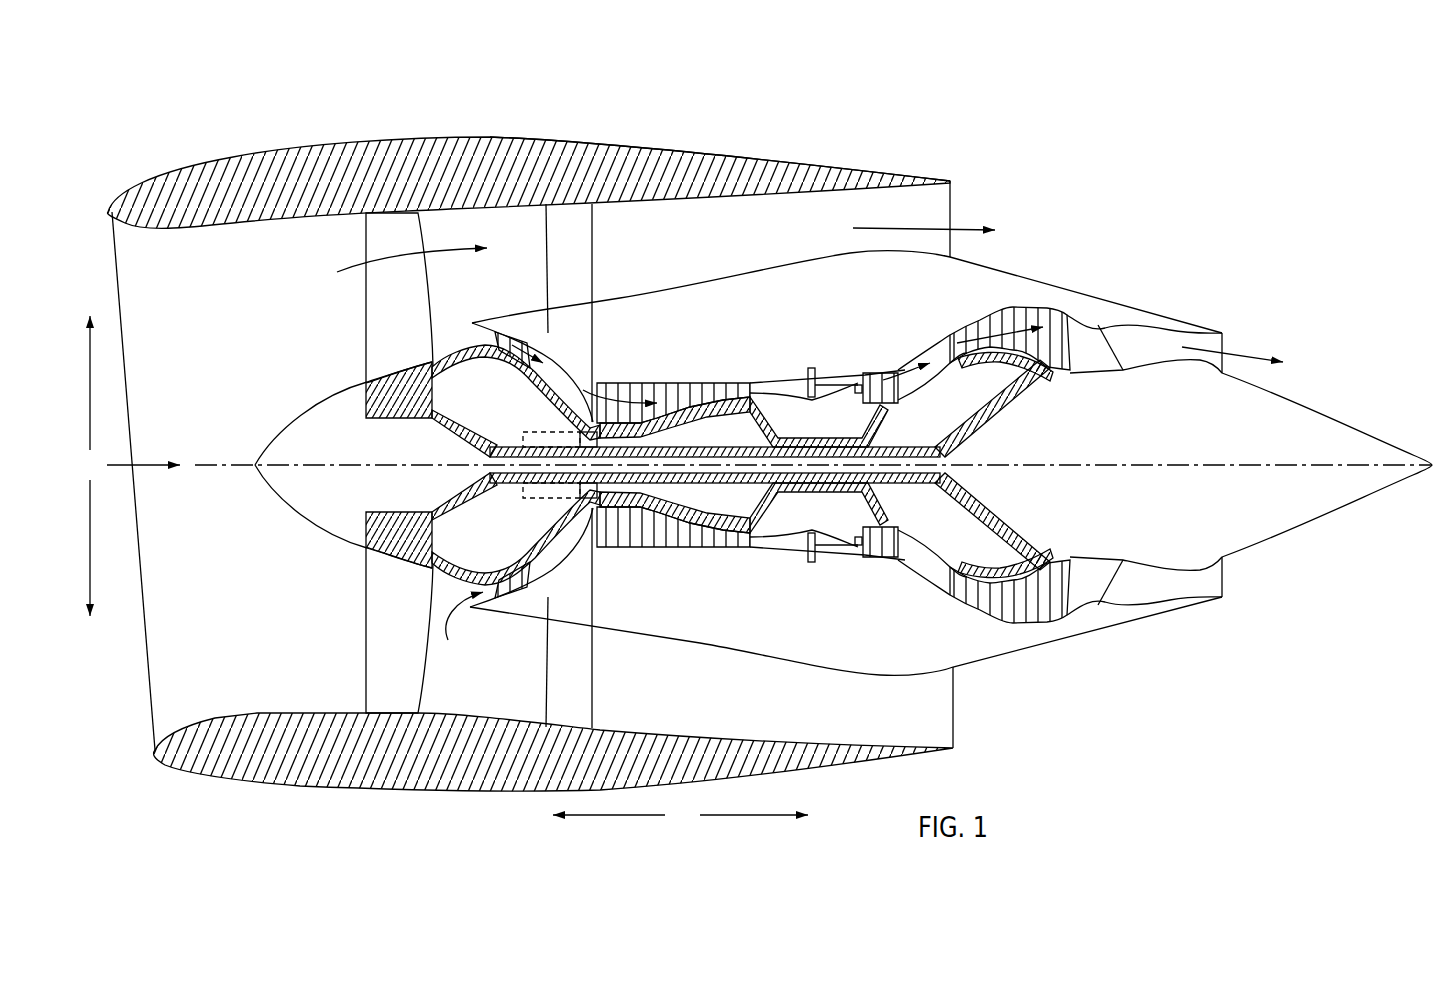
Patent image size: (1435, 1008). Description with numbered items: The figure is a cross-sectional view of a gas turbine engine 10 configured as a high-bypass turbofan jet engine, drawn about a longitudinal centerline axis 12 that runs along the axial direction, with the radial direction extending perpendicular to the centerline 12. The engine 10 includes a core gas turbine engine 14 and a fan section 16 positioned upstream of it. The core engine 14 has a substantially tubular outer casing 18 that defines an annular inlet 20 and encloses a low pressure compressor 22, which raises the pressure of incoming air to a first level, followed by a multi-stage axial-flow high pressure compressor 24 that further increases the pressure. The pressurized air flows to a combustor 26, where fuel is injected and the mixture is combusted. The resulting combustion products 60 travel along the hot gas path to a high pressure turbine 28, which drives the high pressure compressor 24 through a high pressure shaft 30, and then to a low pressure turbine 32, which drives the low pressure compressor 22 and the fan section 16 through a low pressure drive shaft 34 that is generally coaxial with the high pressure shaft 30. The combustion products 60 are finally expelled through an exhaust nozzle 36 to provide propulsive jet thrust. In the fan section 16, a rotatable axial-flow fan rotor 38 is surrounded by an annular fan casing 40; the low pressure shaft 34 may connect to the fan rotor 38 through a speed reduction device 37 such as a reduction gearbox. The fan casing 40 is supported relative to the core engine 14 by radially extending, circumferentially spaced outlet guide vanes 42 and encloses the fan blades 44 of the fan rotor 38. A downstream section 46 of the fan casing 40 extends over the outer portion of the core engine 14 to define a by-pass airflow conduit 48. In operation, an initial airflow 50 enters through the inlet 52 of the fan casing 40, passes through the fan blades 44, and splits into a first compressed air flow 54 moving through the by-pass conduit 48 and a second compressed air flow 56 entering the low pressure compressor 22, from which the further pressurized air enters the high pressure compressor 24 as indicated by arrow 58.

The gas turbine engine 10 is at (1133, 163).
The longitudinal or axial centerline axis 12 is at (1117, 463).
The core gas turbine engine 14 is at (834, 320).
The fan section 16 is at (410, 125).
The outer casing 18 is at (770, 658).
The annular inlet 20 is at (461, 631).
The low pressure (LP) compressor 22 is at (547, 547).
The high pressure (HP) compressor 24 is at (627, 537).
The combustor 26 is at (828, 555).
The high pressure (HP) turbine 28 is at (918, 548).
The high pressure (HP) shaft or spool 30 is at (835, 428).
The low pressure (LP) turbine 32 is at (1040, 623).
The low pressure (LP) drive shaft or spool 34 is at (543, 437).
The exhaust nozzle 36 is at (1222, 340).
The speed reduction device 37 is at (553, 437).
The fan rotor 38 is at (430, 418).
The fan casing 40 is at (460, 790).
The outlet guide vanes 42 is at (593, 230).
The fan blades 44 is at (366, 657).
The downstream section of the fan casing 46 is at (797, 158).
The by-pass airflow conduit 48 is at (746, 232).
The initial airflow 50 is at (140, 460).
The inlet 52 is at (150, 710).
The first compressed air flow 54 is at (383, 255).
The second compressed air flow 56 is at (452, 337).
The flow entering the HP compressor 58 is at (613, 393).
The combustion products 60 is at (880, 370).